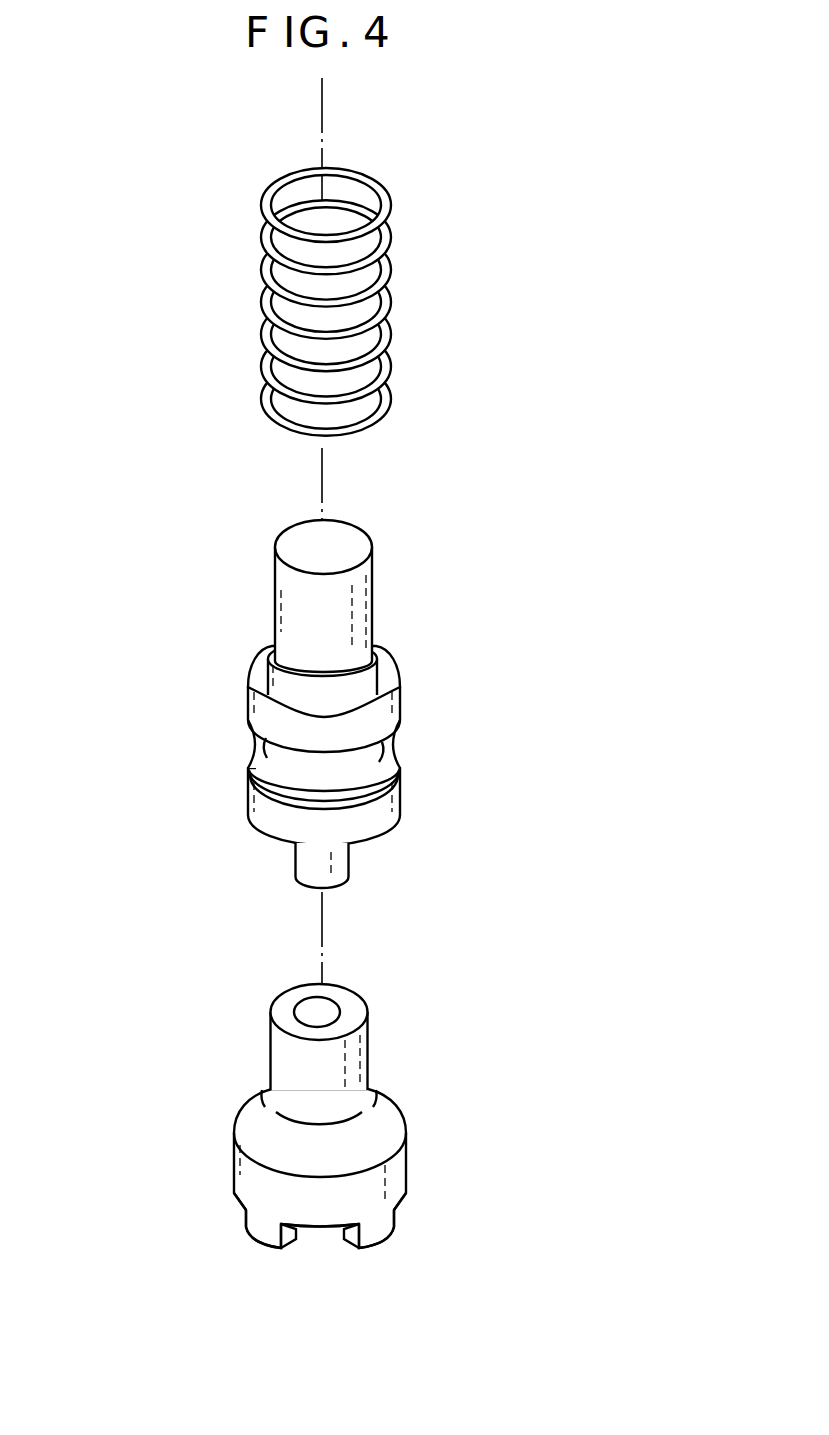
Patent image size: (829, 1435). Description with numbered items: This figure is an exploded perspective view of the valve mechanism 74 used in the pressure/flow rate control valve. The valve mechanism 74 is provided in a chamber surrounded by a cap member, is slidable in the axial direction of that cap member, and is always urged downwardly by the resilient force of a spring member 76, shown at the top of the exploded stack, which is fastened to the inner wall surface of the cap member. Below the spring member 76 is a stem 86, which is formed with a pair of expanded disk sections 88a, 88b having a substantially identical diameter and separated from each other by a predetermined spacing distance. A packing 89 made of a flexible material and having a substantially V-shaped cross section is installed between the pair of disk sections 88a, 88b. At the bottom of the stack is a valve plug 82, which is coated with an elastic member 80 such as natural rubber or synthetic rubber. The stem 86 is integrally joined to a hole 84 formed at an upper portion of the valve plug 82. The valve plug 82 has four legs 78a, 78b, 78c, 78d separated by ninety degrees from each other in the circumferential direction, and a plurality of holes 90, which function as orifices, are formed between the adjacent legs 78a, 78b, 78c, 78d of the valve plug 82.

The valve mechanism 74 is at (415, 704).
The spring member 76 is at (388, 291).
The leg 78a is at (258, 1224).
The leg 78b is at (393, 1225).
The leg 78c is at (473, 1216).
The leg 78d is at (194, 1211).
The elastic member 80 is at (322, 1115).
The valve plug 82 is at (388, 1090).
The hole 84 is at (336, 1010).
The stem 86 is at (367, 612).
The disk section 88a is at (398, 697).
The disk section 88b is at (398, 797).
The packing 89 is at (393, 737).
The hole 90 is at (238, 1201).